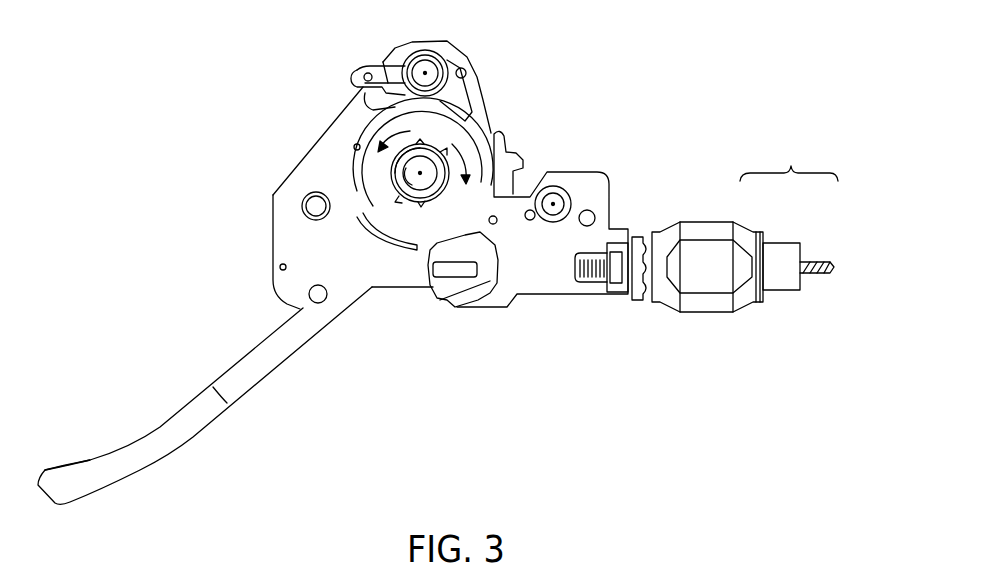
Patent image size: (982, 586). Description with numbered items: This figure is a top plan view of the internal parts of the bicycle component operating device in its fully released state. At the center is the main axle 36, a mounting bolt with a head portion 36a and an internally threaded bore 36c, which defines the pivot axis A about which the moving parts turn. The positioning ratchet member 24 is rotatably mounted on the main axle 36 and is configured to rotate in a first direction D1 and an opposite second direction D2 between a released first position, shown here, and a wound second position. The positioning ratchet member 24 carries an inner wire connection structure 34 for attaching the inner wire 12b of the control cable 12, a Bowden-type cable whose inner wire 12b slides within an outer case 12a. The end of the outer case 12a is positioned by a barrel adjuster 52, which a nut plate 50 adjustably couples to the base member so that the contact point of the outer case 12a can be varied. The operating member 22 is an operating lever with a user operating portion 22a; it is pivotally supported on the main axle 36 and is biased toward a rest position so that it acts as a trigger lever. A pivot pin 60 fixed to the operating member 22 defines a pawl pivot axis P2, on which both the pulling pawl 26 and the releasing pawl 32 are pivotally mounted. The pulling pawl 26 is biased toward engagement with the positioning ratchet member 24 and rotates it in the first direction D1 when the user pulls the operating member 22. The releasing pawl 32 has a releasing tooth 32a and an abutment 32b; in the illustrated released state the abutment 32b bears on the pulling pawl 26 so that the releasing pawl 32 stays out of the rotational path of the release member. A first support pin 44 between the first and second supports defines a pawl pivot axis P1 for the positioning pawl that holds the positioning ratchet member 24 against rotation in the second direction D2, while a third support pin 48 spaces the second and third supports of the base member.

The control cable 12 is at (789, 160).
The outer case 12a is at (780, 243).
The inner wire 12b is at (812, 261).
The operating member 22 is at (195, 440).
The user operating portion 22a is at (83, 463).
The positioning ratchet member 24 is at (494, 133).
The pulling pawl 26 is at (480, 79).
The releasing pawl 32 is at (370, 59).
The releasing tooth 32a is at (370, 110).
The abutment 32b is at (364, 76).
The inner wire connection structure 34 is at (437, 300).
The main axle 36 is at (391, 177).
The head portion 36a is at (396, 203).
The internally threaded bore 36c is at (414, 168).
The first support pin 44 is at (567, 192).
The third support pin 48 is at (303, 208).
The nut plate 50 is at (616, 290).
The barrel adjuster 52 is at (712, 314).
The pivot pin 60 is at (418, 60).
The pivot axis A is at (422, 176).
The first direction D1 is at (462, 157).
The second direction D2 is at (375, 138).
The pawl pivot axis P1 is at (553, 207).
The pawl pivot axis P2 is at (427, 71).